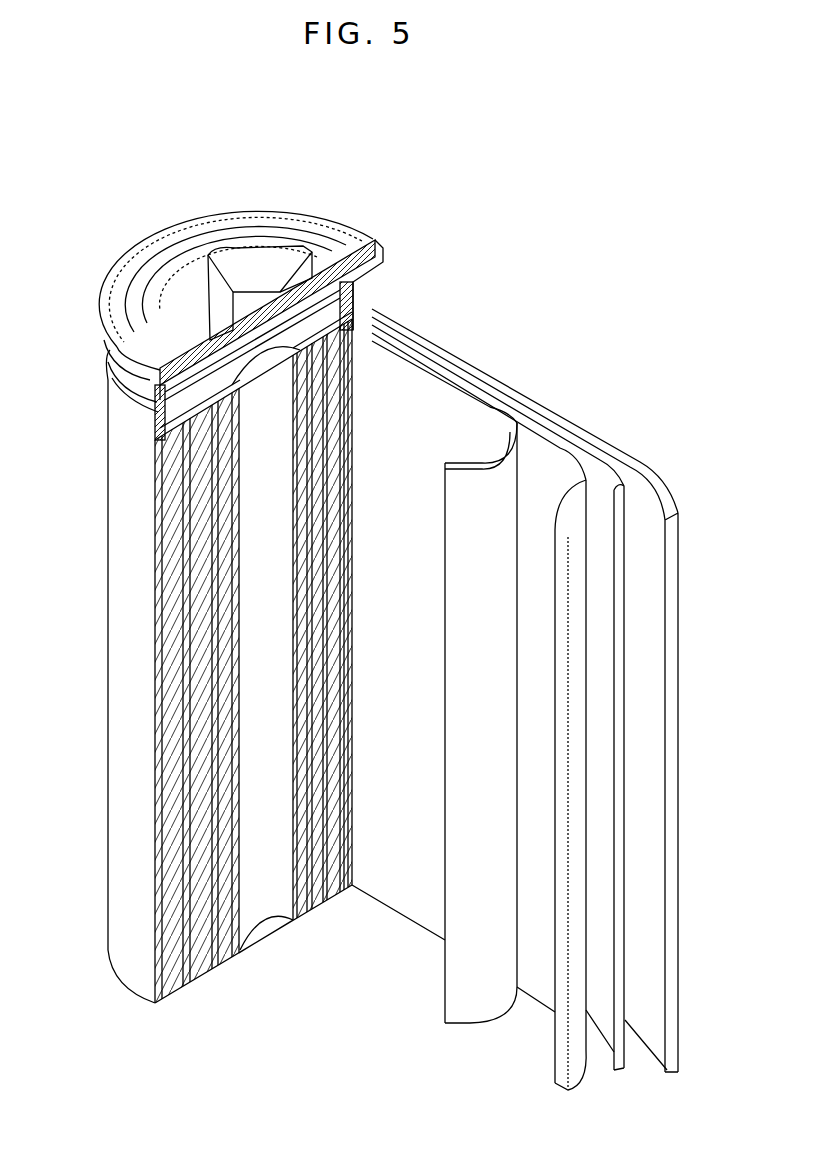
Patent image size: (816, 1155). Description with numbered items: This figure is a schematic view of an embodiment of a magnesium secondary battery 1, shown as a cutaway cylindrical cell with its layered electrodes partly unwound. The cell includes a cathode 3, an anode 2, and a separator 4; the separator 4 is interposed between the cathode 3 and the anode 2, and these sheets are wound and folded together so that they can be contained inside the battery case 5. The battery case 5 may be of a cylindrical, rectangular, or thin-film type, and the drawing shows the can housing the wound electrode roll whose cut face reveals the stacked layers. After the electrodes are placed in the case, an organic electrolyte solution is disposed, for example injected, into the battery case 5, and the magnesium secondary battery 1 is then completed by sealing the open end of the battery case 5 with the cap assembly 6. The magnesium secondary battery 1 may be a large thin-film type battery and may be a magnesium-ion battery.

The magnesium secondary battery 1 is at (540, 229).
The anode 2 is at (654, 477).
The cathode 3 is at (568, 480).
The separator 4 is at (482, 460).
The battery case 5 is at (115, 655).
The cap assembly 6 is at (237, 258).